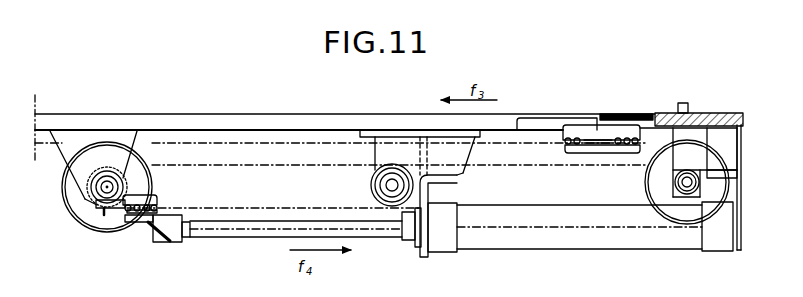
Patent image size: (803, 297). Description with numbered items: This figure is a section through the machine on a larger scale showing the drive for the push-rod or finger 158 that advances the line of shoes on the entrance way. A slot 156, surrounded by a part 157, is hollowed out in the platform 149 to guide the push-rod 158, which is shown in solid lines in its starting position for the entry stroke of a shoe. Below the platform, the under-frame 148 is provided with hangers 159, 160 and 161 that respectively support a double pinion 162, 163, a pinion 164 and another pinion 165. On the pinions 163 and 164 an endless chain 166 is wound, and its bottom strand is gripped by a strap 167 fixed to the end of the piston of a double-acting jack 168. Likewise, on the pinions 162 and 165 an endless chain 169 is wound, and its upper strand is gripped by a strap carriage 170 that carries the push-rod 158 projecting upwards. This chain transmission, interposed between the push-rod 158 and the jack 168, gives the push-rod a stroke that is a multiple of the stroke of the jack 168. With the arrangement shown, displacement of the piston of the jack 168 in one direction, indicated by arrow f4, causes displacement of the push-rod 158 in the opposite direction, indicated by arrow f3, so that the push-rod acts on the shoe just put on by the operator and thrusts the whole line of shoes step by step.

The under-frame 148 is at (735, 172).
The platform 149 is at (745, 117).
The slot 156 is at (657, 120).
The part 157 is at (707, 115).
The push-rod 158 is at (603, 113).
The hanger 159 is at (68, 150).
The hanger 160 is at (388, 152).
The hanger 161 is at (698, 160).
The double pinion 162 is at (78, 223).
The double pinion 163 is at (105, 215).
The pinion 164 is at (392, 207).
The pinion 165 is at (713, 225).
The endless chain 166 is at (217, 168).
The strap 167 is at (150, 227).
The double-acting jack 168 is at (497, 240).
The endless chain 169 is at (600, 227).
The strap carriage 170 is at (587, 152).